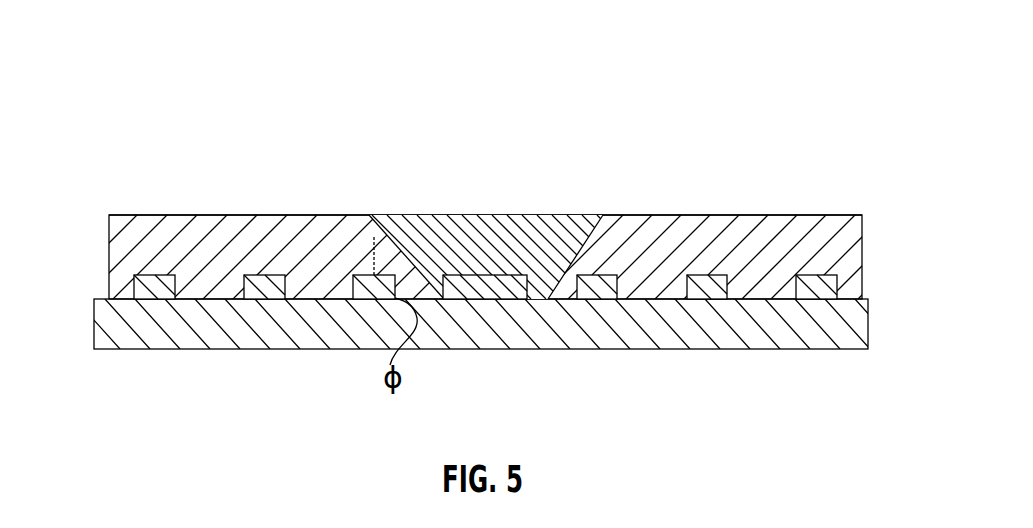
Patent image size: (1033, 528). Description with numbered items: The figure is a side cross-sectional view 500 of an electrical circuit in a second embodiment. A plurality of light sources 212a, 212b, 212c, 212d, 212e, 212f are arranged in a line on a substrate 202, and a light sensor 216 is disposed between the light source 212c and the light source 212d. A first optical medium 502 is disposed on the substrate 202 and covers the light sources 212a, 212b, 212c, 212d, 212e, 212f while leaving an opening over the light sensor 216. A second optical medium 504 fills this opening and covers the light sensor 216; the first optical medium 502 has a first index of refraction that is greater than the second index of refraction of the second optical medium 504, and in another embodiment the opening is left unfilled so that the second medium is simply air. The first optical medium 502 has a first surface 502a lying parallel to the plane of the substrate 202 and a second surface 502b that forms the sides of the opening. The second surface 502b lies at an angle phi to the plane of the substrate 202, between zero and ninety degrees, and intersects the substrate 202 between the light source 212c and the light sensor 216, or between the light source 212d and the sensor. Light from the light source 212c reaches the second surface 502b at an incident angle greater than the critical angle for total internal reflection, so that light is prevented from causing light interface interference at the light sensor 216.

The side cross-sectional view 500 is at (814, 38).
The substrate 202 is at (860, 328).
The first optical medium 502 is at (318, 230).
The first surface 502a is at (242, 215).
The second surface 502b is at (384, 228).
The second optical medium 504 is at (470, 237).
The light source 212a is at (133, 290).
The light source 212b is at (265, 299).
The light source 212c is at (364, 299).
The light source 212d is at (600, 299).
The light source 212e is at (707, 299).
The light source 212f is at (825, 299).
The light sensor 216 is at (482, 312).